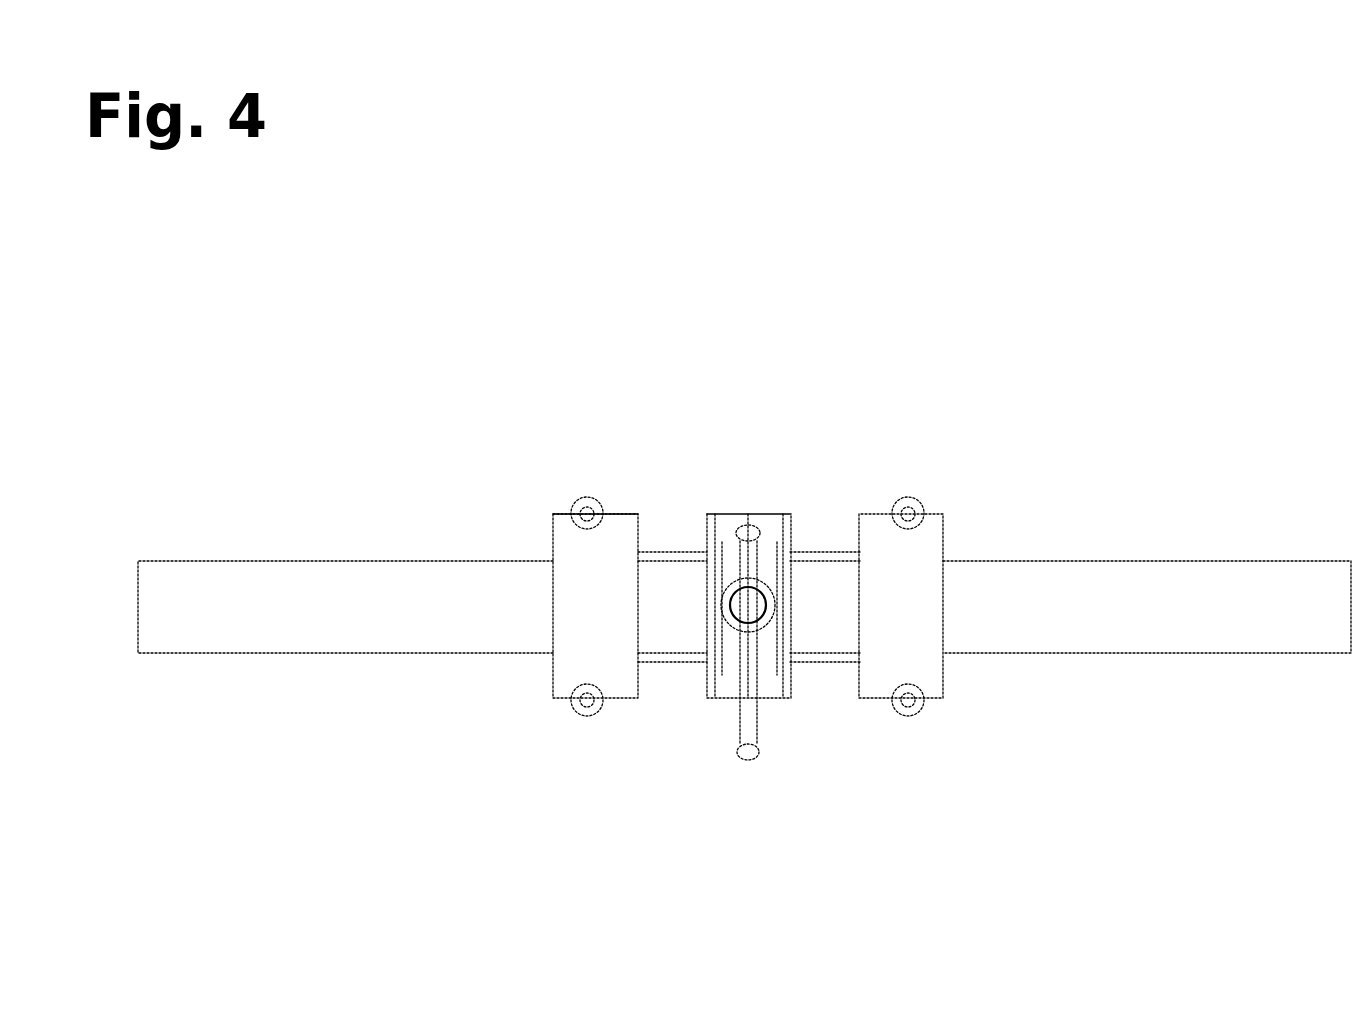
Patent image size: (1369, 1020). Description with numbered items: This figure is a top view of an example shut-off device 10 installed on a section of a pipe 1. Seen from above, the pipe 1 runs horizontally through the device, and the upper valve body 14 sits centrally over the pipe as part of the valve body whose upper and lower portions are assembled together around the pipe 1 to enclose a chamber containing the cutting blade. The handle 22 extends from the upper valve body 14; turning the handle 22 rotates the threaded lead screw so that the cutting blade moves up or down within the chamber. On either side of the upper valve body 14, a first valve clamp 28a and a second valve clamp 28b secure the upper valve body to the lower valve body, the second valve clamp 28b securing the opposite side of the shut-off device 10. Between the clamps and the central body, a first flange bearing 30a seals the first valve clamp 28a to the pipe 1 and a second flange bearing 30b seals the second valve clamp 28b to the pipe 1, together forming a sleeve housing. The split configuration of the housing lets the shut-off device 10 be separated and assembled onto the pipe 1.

The pipe 1 is at (248, 560).
The shut-off device 10 is at (390, 468).
The upper valve body 14 is at (725, 513).
The handle 22 is at (741, 761).
The first valve clamp 28a is at (553, 514).
The second valve clamp 28b is at (860, 513).
The first flange bearing 30a is at (681, 662).
The second flange bearing 30b is at (838, 661).